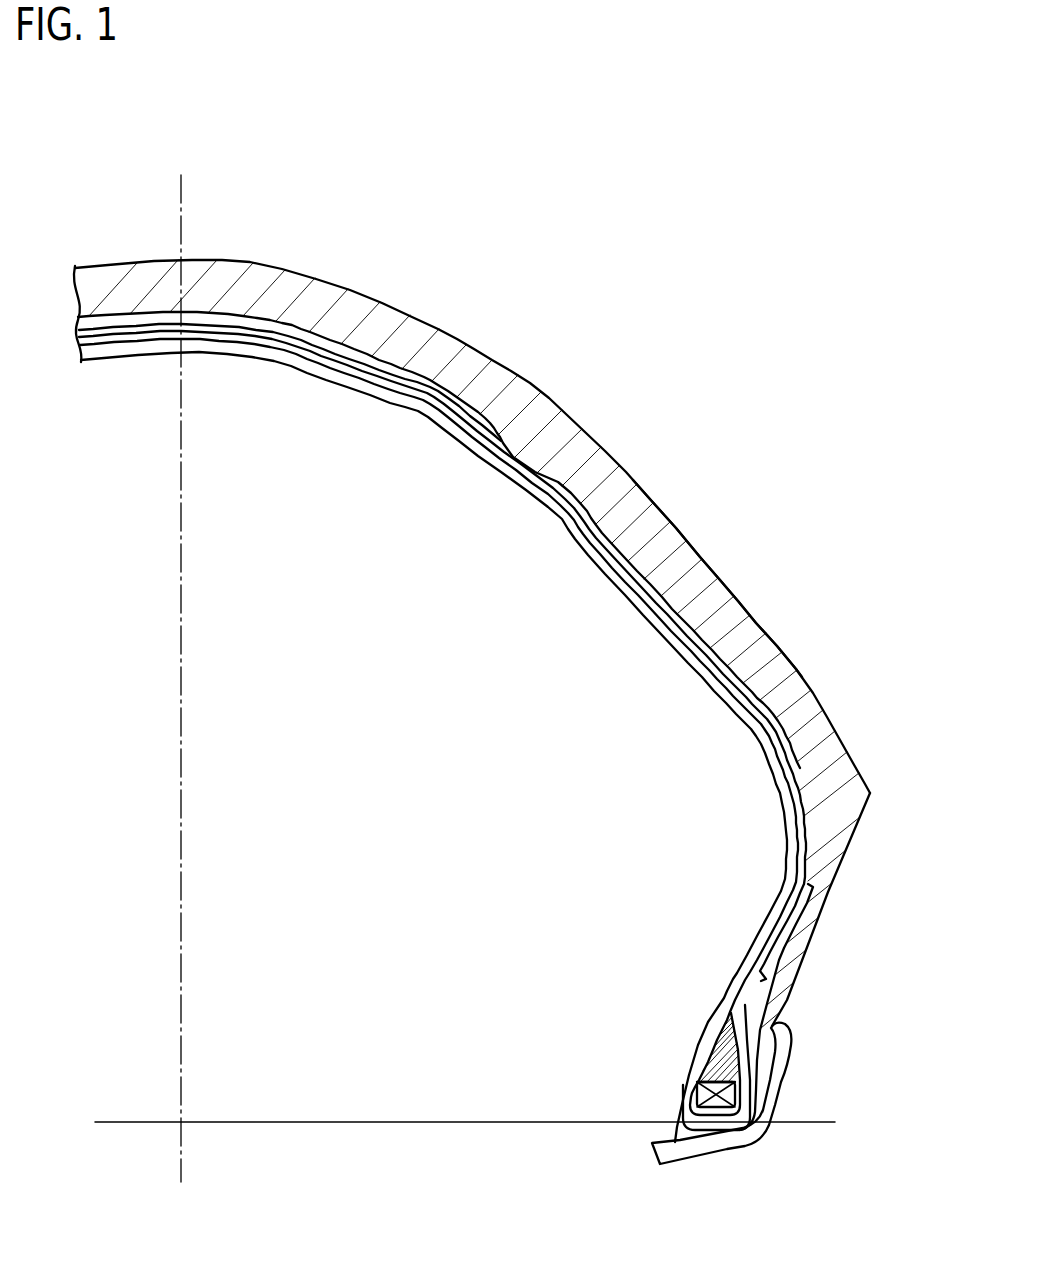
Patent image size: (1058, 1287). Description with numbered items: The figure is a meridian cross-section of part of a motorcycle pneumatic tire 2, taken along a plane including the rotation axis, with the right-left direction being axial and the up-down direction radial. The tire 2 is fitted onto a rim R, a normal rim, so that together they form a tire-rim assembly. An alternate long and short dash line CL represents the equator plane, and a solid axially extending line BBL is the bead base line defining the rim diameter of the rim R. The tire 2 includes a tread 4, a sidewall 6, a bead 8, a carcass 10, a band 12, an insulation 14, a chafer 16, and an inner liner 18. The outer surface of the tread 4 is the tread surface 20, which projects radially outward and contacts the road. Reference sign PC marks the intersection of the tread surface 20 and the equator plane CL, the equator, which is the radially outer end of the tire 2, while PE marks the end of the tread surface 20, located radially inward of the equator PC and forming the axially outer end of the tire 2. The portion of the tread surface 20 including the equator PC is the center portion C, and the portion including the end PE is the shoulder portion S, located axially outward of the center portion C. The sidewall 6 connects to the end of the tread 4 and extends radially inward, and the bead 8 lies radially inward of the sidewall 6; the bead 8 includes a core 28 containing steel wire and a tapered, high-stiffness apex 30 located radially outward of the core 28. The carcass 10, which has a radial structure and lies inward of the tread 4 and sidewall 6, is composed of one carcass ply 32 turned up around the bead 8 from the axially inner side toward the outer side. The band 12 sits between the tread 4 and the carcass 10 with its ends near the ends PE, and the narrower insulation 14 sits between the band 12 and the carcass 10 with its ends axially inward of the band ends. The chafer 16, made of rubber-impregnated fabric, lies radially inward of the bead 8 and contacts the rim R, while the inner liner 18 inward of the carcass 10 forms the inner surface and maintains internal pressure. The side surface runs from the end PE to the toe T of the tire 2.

The tire 2 is at (753, 375).
The tread 4 is at (415, 328).
The sidewall 6 is at (815, 905).
The bead 8 is at (628, 1023).
The carcass 10 is at (141, 362).
The band 12 is at (553, 492).
The insulation 14 is at (243, 332).
The chafer 16 is at (665, 1141).
The inner liner 18 is at (577, 574).
The tread surface 20 is at (683, 528).
The core 28 is at (700, 1090).
The apex 30 is at (712, 1042).
The carcass ply 32 is at (457, 778).
The equator plane CL is at (183, 545).
The bead base line BBL is at (416, 1124).
The equator PC is at (180, 259).
The center portion C is at (244, 250).
The shoulder portion S is at (815, 670).
The end of the tread surface PE is at (873, 793).
The toe T is at (681, 1162).
The rim R is at (730, 1164).